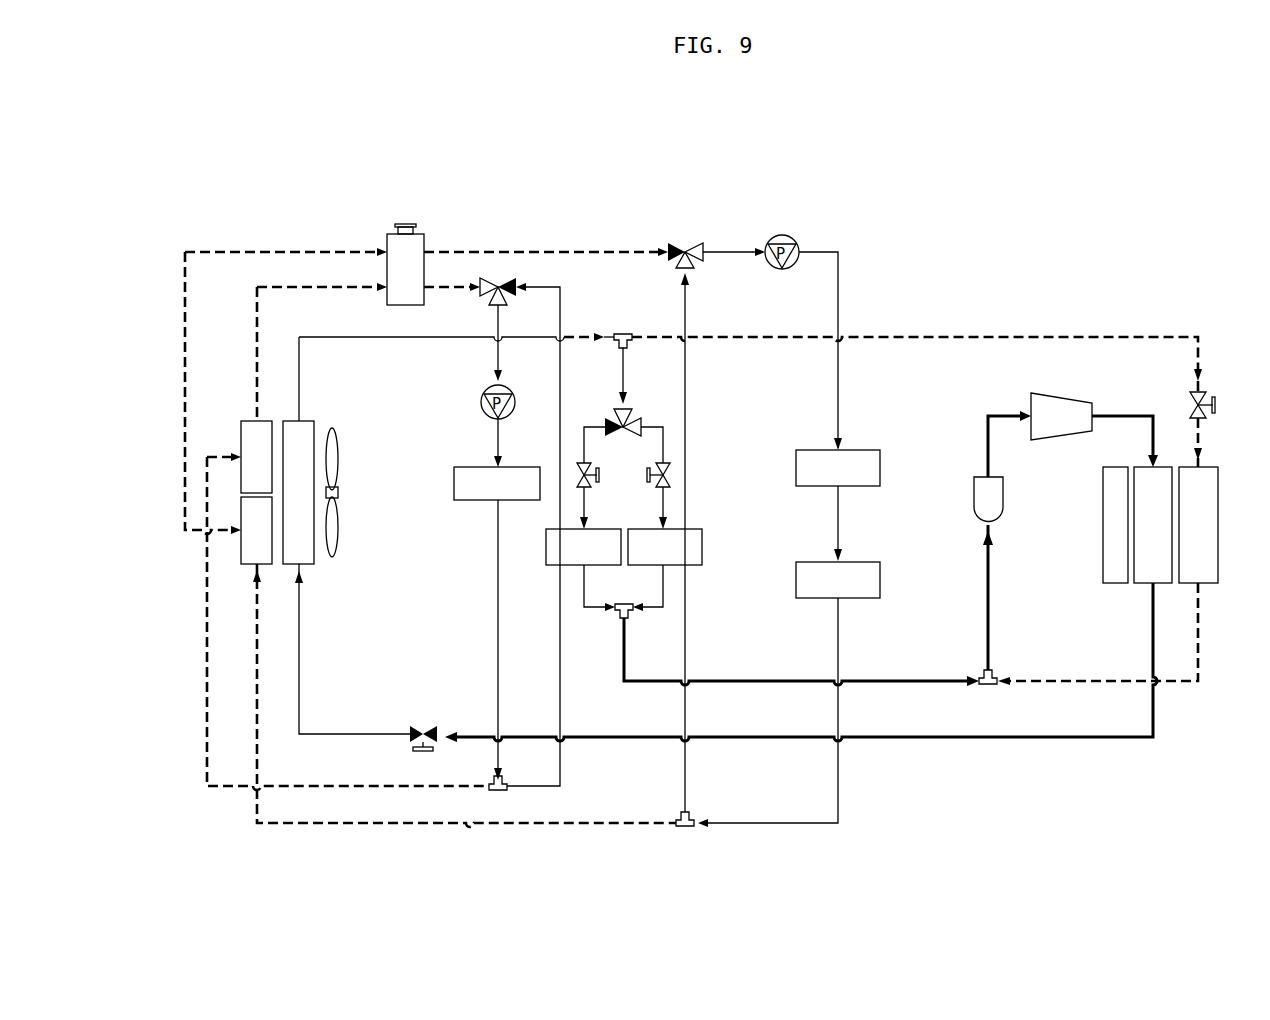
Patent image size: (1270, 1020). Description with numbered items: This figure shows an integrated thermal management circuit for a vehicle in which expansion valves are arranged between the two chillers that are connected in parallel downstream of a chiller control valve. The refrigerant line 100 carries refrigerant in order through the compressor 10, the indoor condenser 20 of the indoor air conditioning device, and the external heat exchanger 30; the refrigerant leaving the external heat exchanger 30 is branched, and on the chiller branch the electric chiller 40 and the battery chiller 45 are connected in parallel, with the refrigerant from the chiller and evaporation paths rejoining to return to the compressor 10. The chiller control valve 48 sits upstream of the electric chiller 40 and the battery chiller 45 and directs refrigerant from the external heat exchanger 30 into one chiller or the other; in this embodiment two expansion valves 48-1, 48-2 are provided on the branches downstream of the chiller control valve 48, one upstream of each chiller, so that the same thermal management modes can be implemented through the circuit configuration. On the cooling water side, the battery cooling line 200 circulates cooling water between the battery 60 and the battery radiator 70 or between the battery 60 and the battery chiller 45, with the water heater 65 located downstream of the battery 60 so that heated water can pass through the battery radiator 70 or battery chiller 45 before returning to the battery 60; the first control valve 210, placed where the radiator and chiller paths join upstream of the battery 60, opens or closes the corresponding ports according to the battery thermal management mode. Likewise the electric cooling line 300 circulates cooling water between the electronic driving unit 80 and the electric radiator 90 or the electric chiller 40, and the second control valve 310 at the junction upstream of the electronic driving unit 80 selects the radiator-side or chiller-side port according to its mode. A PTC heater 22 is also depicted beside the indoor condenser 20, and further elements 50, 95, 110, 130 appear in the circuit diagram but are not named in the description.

The compressor 10 is at (1073, 402).
The indoor condenser 20 is at (1143, 585).
The PTC heater 22 is at (1102, 555).
The external heat exchanger 30 is at (311, 566).
The electric chiller 40 is at (548, 567).
The battery chiller 45 is at (703, 548).
The chiller control valve 48 is at (643, 425).
The first expansion valve 48-1 is at (586, 462).
The second expansion valve 48-2 is at (671, 470).
The water-cooled condenser 50 is at (1186, 585).
The battery 60 is at (882, 468).
The water heater 65 is at (882, 578).
The battery radiator 70 is at (246, 566).
The electronic driving unit 80 is at (453, 484).
The electric radiator 90 is at (245, 420).
The reservoir tank 95 is at (386, 240).
The refrigerant line 100 is at (1006, 335).
The refrigerant valve 110 is at (424, 725).
The expansion valve 130 is at (1190, 405).
The battery cooling line 200 is at (841, 400).
The first control valve 210 is at (686, 245).
The electric cooling line 300 is at (496, 580).
The second control valve 310 is at (500, 282).